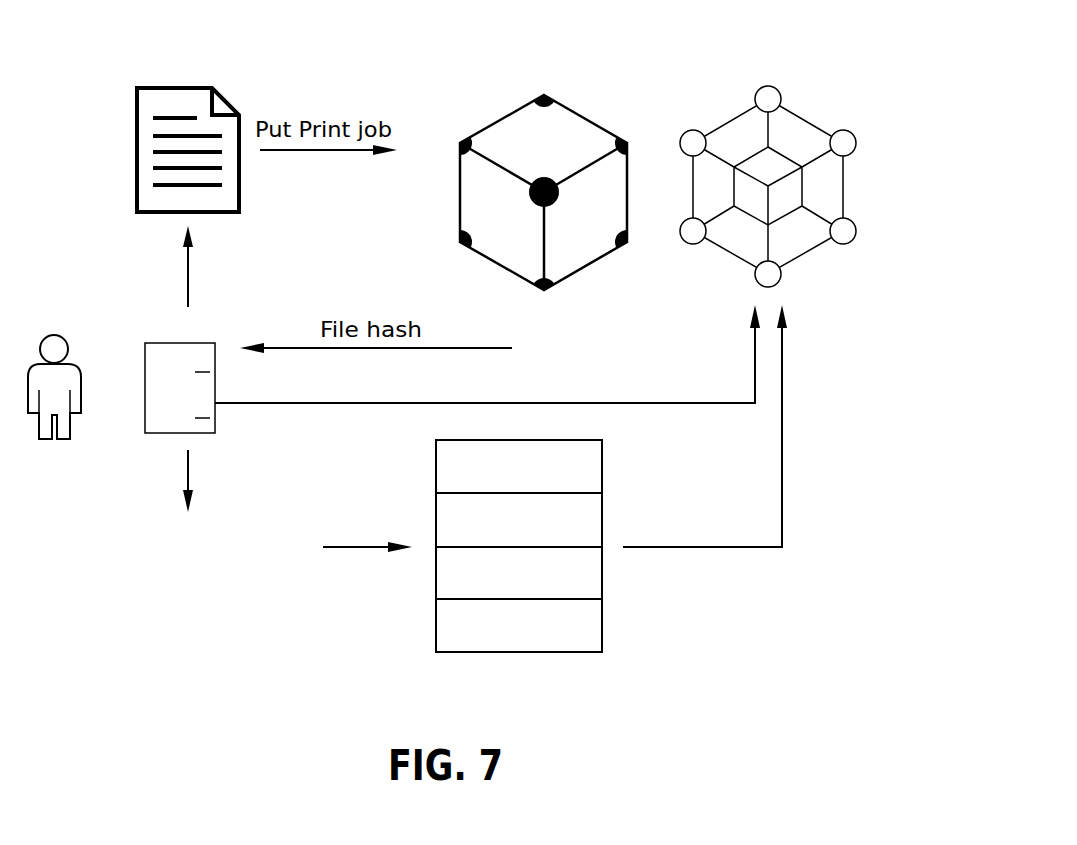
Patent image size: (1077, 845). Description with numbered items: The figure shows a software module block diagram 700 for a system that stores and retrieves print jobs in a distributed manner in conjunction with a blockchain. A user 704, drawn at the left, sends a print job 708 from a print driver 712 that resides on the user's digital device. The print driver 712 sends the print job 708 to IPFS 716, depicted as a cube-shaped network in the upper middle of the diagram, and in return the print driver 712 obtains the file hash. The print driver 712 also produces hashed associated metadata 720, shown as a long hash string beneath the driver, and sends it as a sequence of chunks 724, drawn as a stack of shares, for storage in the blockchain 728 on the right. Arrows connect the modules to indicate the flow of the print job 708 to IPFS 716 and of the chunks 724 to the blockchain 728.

The software module block diagram 700 is at (885, 84).
The user 704 is at (40, 375).
The print job 708 is at (215, 213).
The print driver 712 is at (203, 433).
The IPFS 716 is at (590, 272).
The hashed associated metadata 720 is at (224, 566).
The chunks 724 is at (517, 652).
The blockchain 728 is at (808, 255).